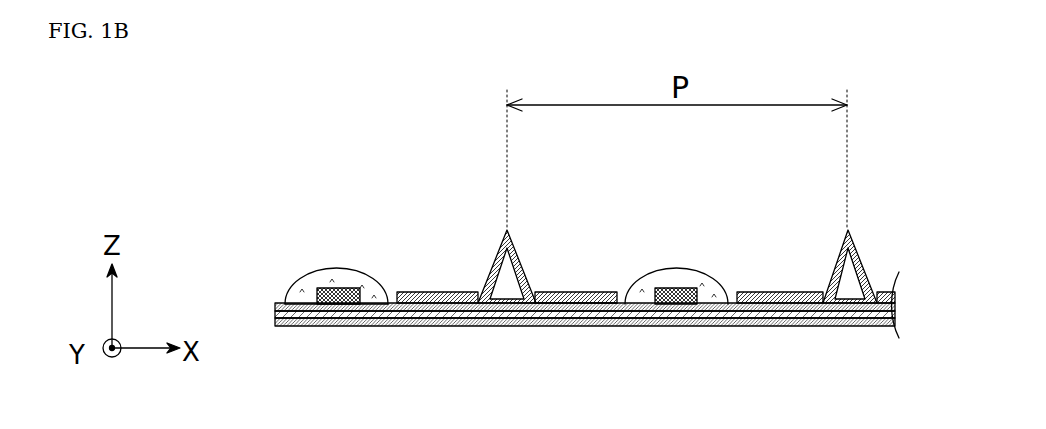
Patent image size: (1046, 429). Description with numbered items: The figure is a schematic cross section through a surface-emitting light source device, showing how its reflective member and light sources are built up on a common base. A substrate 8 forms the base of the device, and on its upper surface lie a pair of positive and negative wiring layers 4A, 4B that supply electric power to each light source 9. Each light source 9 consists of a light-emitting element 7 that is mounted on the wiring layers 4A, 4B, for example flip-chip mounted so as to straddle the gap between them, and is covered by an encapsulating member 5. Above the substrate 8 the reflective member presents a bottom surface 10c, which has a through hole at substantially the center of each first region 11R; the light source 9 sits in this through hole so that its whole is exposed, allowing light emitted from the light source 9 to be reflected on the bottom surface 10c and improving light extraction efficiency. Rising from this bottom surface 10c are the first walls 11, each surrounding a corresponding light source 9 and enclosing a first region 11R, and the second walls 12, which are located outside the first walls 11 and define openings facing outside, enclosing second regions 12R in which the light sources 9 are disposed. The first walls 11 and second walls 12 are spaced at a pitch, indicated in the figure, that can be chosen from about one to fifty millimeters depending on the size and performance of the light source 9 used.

The wiring layer 4A is at (585, 315).
The wiring layer 4B is at (795, 315).
The encapsulating member 5 is at (289, 296).
The light-emitting element 7 is at (334, 306).
The substrate 8 is at (693, 318).
The light source 9 is at (318, 266).
The bottom surface 10c is at (593, 298).
The first wall 11 is at (515, 260).
The first region 11R is at (740, 238).
The second wall 12 is at (490, 263).
The second region 12R is at (403, 255).